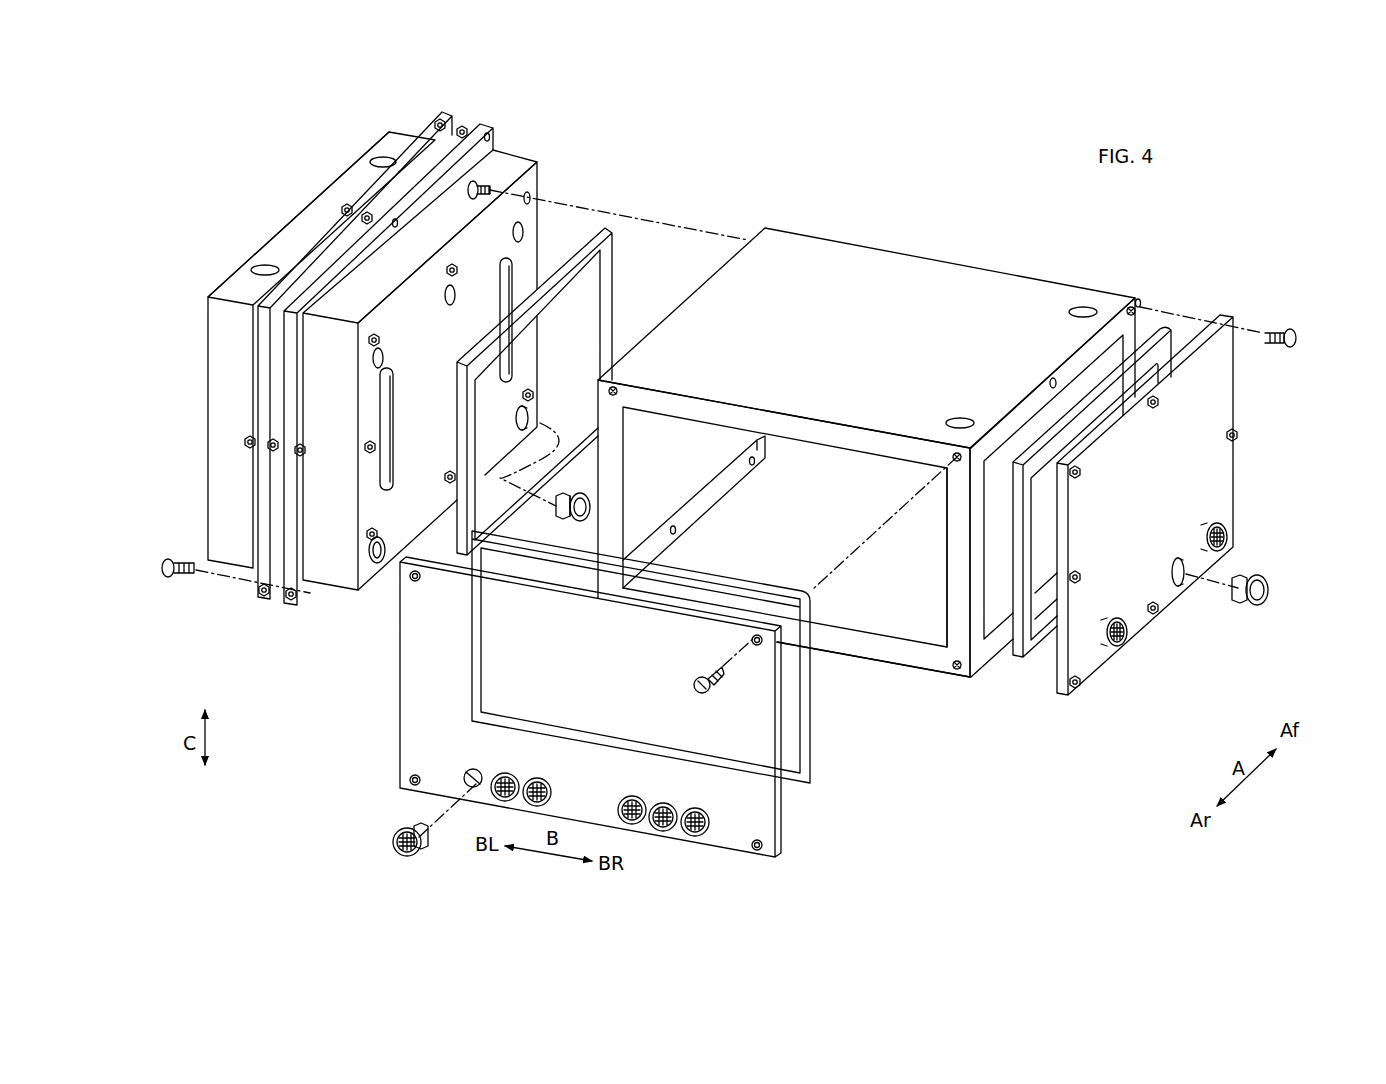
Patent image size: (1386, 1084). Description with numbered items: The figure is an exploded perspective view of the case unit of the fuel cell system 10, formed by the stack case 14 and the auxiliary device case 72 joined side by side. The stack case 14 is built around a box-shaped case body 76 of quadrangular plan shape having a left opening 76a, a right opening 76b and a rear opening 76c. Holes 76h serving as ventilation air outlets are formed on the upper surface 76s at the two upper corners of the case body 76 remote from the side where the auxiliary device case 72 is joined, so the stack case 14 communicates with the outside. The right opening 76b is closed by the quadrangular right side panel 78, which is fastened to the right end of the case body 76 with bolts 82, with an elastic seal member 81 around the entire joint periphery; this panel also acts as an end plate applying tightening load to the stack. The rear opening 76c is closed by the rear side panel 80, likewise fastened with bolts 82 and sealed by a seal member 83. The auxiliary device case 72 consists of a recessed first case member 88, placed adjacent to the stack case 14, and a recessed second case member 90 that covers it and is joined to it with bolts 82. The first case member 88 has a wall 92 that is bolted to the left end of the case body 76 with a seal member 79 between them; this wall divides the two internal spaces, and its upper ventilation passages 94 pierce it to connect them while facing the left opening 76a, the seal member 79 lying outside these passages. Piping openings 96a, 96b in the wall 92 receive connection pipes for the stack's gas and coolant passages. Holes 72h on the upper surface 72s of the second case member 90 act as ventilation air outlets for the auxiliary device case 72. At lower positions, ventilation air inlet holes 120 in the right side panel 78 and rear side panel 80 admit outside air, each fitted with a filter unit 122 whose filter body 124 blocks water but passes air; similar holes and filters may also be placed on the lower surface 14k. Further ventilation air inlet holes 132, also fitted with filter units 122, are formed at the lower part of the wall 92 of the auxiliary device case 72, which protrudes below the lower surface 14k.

The fuel cell system 10 is at (1026, 182).
The stack case 14 is at (1133, 262).
The lower surface 14k is at (874, 615).
The auxiliary device case 72 is at (318, 670).
The holes 72h is at (384, 162).
The upper surface 72s is at (288, 233).
The case body 76 is at (961, 280).
The left opening 76a is at (720, 466).
The right opening 76b is at (990, 637).
The rear opening 76c is at (946, 584).
The holes 76h is at (1084, 308).
The upper surface 76s is at (855, 262).
The right side panel 78 is at (1196, 606).
The seal member 79 is at (612, 270).
The rear side panel 80 is at (430, 738).
The seal member 81 is at (1018, 532).
The bolts 82 is at (166, 578).
The seal member 83 is at (813, 756).
The first case member 88 is at (341, 592).
The second case member 90 is at (229, 570).
The wall 92 is at (524, 266).
The ventilation passages 94 is at (513, 232).
The piping opening 96a is at (512, 347).
The piping opening 96b is at (394, 422).
The ventilation air inlet holes 120 is at (1180, 558).
The filter unit 122 is at (590, 527).
The filter body 124 is at (590, 507).
The ventilation air inlet holes 132 is at (531, 411).